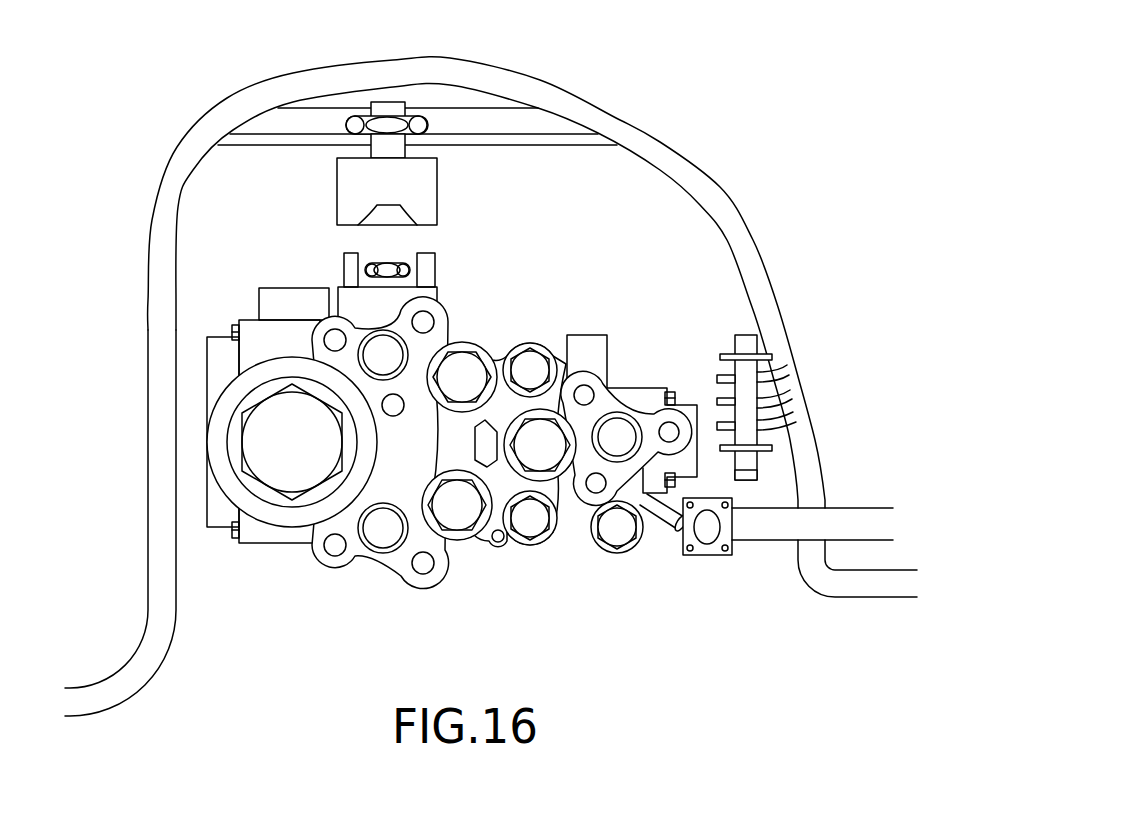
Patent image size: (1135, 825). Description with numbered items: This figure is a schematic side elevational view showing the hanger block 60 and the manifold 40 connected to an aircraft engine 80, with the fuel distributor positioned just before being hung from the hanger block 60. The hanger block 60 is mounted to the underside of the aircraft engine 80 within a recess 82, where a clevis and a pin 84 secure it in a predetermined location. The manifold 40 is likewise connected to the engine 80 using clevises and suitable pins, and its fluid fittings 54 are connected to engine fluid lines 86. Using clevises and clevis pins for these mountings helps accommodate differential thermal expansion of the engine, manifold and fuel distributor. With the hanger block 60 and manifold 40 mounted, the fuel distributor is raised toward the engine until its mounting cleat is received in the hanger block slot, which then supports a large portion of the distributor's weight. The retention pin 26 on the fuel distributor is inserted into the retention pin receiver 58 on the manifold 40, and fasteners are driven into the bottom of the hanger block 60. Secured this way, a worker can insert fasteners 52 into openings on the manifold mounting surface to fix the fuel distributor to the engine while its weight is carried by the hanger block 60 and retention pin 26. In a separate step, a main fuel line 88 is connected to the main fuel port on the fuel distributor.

The retention pin 26 is at (667, 512).
The manifold 40 is at (747, 337).
The fasteners 52 is at (728, 354).
The fluid fittings 54 is at (716, 377).
The retention pin receiver 58 is at (747, 478).
The hanger block 60 is at (425, 180).
The aircraft engine 80 is at (491, 386).
The recess 82 is at (600, 198).
The pin 84 is at (416, 124).
The engine fluid lines 86 is at (773, 372).
The main fuel line 88 is at (772, 532).